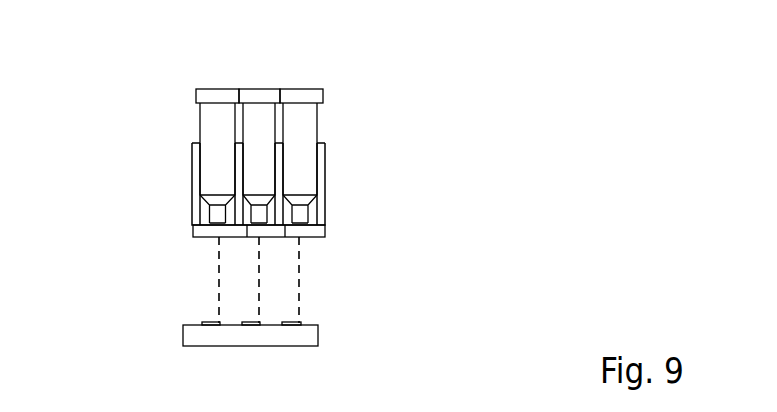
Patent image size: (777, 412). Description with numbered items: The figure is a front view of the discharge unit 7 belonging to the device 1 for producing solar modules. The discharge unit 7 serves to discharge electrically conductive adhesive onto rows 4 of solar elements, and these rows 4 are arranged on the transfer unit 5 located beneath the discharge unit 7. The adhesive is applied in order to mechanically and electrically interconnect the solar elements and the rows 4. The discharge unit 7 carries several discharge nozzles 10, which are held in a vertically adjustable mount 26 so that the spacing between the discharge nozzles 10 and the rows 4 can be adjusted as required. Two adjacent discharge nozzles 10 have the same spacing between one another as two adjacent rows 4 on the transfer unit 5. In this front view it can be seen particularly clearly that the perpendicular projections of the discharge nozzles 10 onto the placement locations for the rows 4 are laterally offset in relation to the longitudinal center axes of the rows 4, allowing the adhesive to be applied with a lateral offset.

The device 1 is at (165, 141).
The discharge unit 7 is at (335, 83).
The vertically adjustable mount 26 is at (329, 221).
The discharge nozzles 10 is at (251, 238).
The rows 4 is at (178, 320).
The transfer unit 5 is at (304, 333).